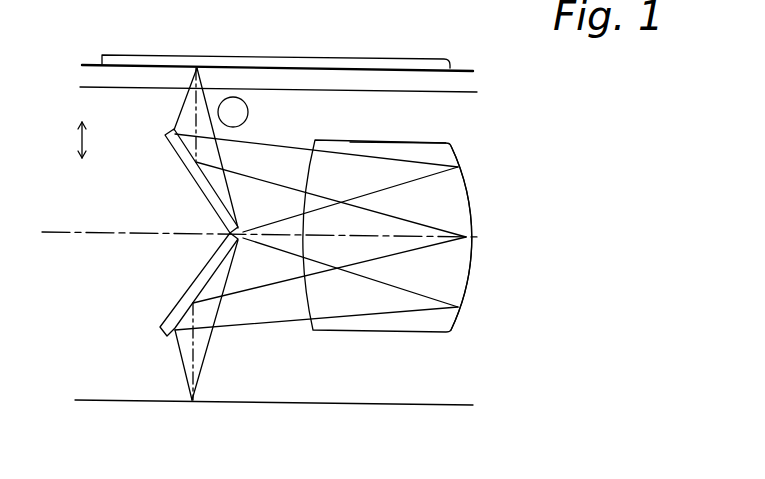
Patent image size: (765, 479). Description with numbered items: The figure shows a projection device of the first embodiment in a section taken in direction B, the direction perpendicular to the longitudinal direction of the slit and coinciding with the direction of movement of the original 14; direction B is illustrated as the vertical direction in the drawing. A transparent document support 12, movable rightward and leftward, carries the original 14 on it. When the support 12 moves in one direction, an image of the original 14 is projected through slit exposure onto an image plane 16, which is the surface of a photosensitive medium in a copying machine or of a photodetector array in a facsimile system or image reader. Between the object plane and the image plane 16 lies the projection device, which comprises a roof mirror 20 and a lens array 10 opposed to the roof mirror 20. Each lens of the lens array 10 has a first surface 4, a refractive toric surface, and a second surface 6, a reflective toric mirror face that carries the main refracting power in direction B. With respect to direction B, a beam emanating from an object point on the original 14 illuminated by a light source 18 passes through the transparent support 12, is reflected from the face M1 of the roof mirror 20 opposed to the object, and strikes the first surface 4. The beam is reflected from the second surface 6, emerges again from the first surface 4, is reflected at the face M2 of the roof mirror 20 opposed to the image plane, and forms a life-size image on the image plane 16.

The first surface 4 is at (322, 162).
The second surface 6 is at (466, 185).
The lens array 10 is at (408, 134).
The transparent document support 12 is at (452, 88).
The original 14 is at (437, 58).
The image plane 16 is at (318, 397).
The light source 18 is at (248, 112).
The roof mirror 20 is at (208, 232).
The face opposed to the object M1 is at (217, 192).
The face opposed to the image plane M2 is at (220, 265).
The direction B is at (69, 140).